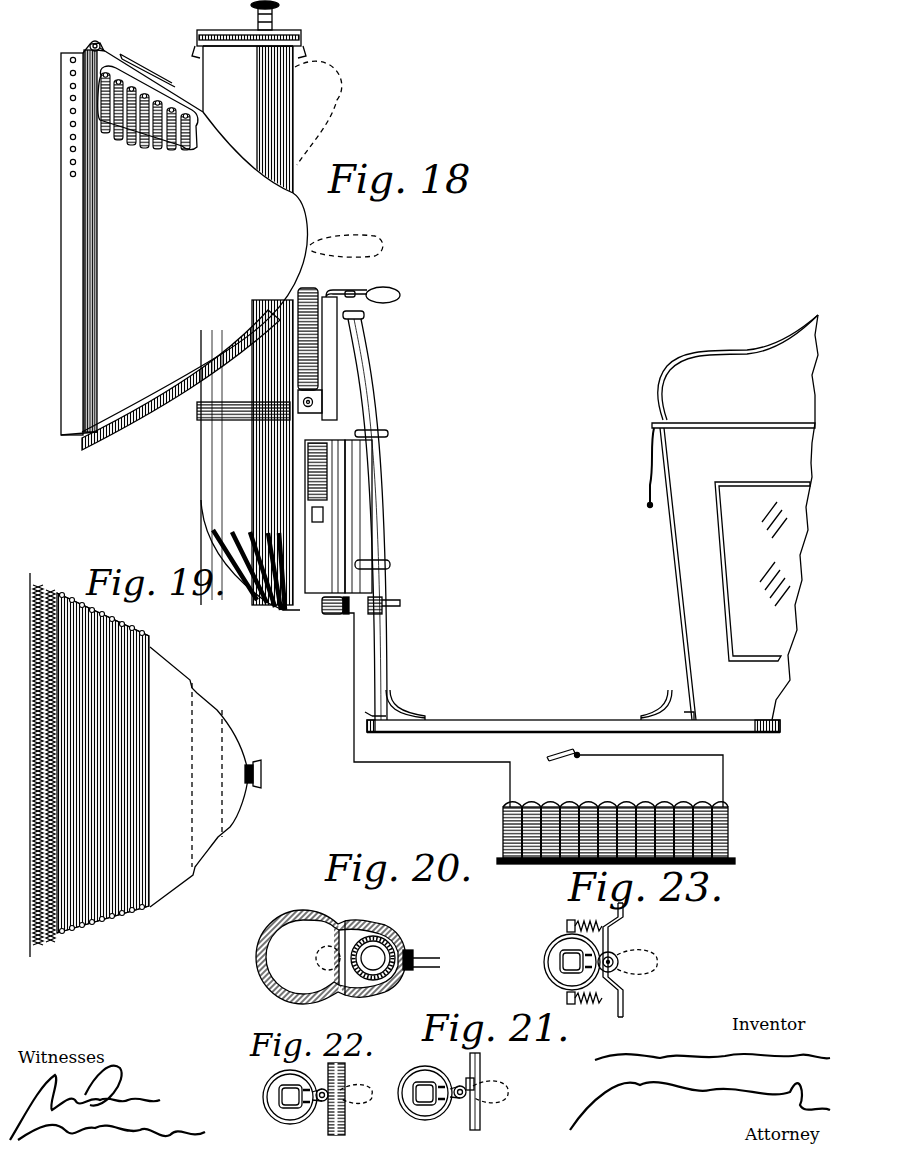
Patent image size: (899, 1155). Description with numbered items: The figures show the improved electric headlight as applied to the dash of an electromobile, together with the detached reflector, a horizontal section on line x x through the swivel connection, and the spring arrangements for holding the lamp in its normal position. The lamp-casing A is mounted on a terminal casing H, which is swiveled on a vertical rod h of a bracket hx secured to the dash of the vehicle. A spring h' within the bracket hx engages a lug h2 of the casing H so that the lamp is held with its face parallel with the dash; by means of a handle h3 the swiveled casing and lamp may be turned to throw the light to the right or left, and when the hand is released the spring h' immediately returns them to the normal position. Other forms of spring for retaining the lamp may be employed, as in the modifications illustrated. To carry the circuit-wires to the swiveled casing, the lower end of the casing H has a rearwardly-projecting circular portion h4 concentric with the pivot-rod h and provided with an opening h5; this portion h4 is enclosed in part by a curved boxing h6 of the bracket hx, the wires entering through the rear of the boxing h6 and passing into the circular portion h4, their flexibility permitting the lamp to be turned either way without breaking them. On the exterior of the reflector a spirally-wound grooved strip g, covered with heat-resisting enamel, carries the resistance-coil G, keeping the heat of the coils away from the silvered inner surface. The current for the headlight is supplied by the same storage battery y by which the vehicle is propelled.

In FIG. 18, the lamp-casing A is at (194, 249).
In FIG. 18, the resistance-coil G is at (126, 82).
In FIG. 19, the resistance-coil G is at (99, 751).
In FIG. 19, the spirally-wound grooved or ridged strip g is at (42, 582).
In FIG. 18, the terminal casing H is at (199, 458).
In FIG. 18, the vertical rod h is at (371, 515).
In FIG. 20, the vertical rod h is at (372, 952).
In FIG. 18, the spring h' is at (364, 516).
In FIG. 21, the spring h' is at (487, 1088).
In FIG. 18, the lug h2 is at (312, 513).
In FIG. 21, the lug h2 is at (466, 1100).
In FIG. 18, the handle h3 is at (364, 340).
In FIG. 18, the rearwardly-projecting circular portion h4 is at (313, 616).
In FIG. 20, the rearwardly-projecting circular portion h4 is at (362, 983).
In FIG. 20, the opening h5 is at (397, 944).
In FIG. 18, the curved boxing h6 is at (332, 620).
In FIG. 20, the curved boxing h6 is at (397, 922).
In FIG. 18, the bracket hx is at (342, 474).
In FIG. 21, the bracket hx is at (500, 1070).
In FIG. 18, the section line x is at (251, 608).
In FIG. 18, the storage battery y is at (616, 818).